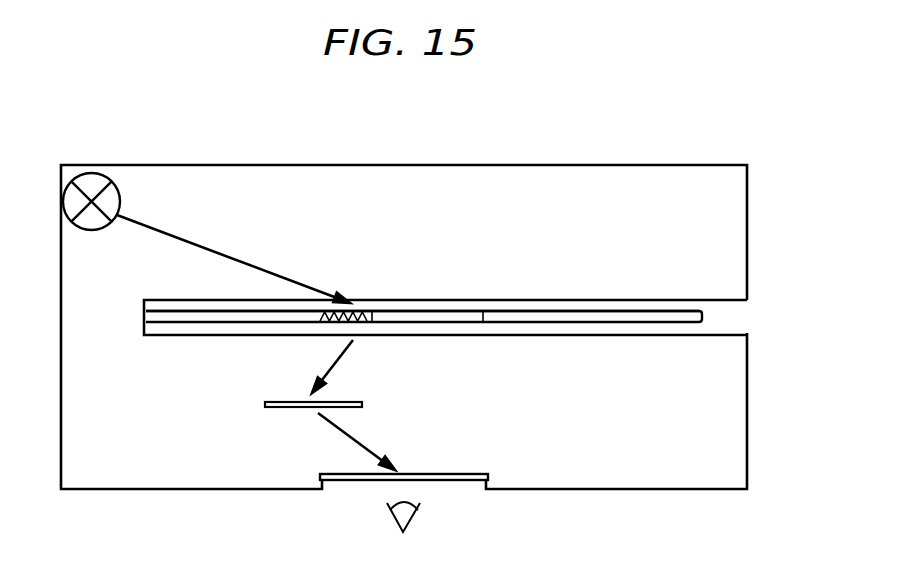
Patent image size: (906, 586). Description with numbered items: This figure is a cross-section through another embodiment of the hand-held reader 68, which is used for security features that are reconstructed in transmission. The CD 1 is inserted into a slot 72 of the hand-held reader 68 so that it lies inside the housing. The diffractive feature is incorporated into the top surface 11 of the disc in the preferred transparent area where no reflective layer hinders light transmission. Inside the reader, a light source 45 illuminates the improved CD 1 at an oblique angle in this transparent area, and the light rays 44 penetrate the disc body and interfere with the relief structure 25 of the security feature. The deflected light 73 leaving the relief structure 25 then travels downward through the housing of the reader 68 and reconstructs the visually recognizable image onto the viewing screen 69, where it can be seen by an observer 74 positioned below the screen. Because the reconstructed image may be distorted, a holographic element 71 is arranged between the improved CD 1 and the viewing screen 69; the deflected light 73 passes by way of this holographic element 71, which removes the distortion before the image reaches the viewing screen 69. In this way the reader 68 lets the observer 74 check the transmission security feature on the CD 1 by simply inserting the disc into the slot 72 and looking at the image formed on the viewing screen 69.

The CD 1 is at (608, 322).
The top surface 11 is at (543, 311).
The relief structure 25 is at (350, 321).
The light rays 44 is at (240, 261).
The light source 45 is at (123, 200).
The hand-held reader 68 is at (699, 215).
The viewing screen 69 is at (341, 481).
The holographic element 71 is at (265, 403).
The slot 72 is at (737, 320).
The deflected light 73 is at (335, 362).
The observer 74 is at (412, 520).